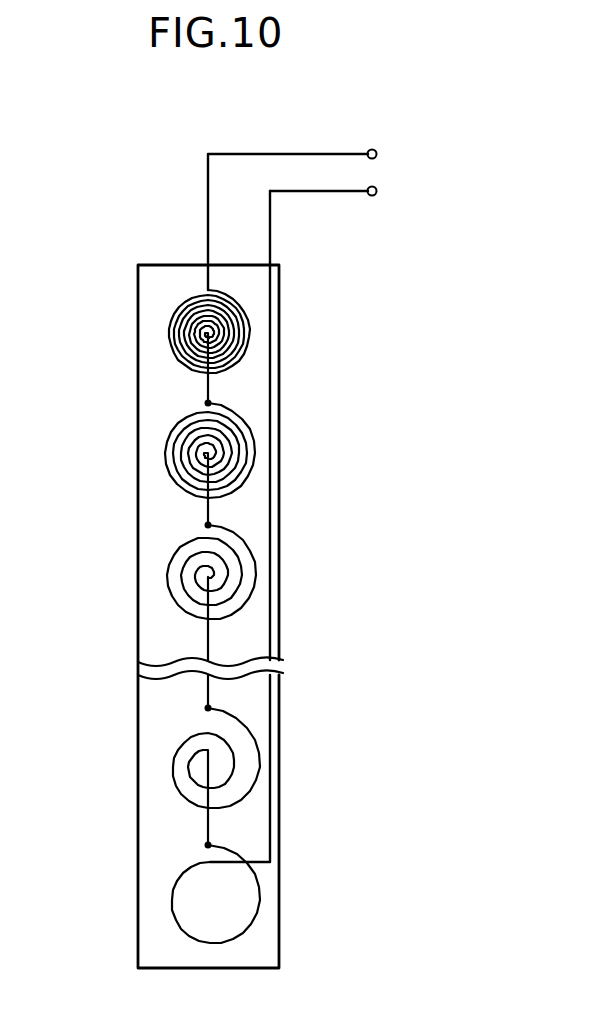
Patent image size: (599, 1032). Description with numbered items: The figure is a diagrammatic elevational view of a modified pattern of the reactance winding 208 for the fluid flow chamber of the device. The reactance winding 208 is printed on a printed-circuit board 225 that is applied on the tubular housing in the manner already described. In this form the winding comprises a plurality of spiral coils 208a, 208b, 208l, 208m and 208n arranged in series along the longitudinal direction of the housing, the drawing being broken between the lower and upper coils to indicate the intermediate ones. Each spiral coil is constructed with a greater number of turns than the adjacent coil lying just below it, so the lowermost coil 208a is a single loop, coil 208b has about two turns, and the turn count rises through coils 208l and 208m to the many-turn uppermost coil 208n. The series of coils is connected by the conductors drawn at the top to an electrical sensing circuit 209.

The reactance winding 208 is at (66, 239).
The spiral coil 208a is at (172, 902).
The spiral coil 208b is at (173, 765).
The spiral coil 208l is at (170, 578).
The spiral coil 208m is at (167, 448).
The spiral coil 208n is at (168, 328).
The electrical sensing circuit 209 is at (322, 220).
The printed-circuit board 225 is at (255, 395).